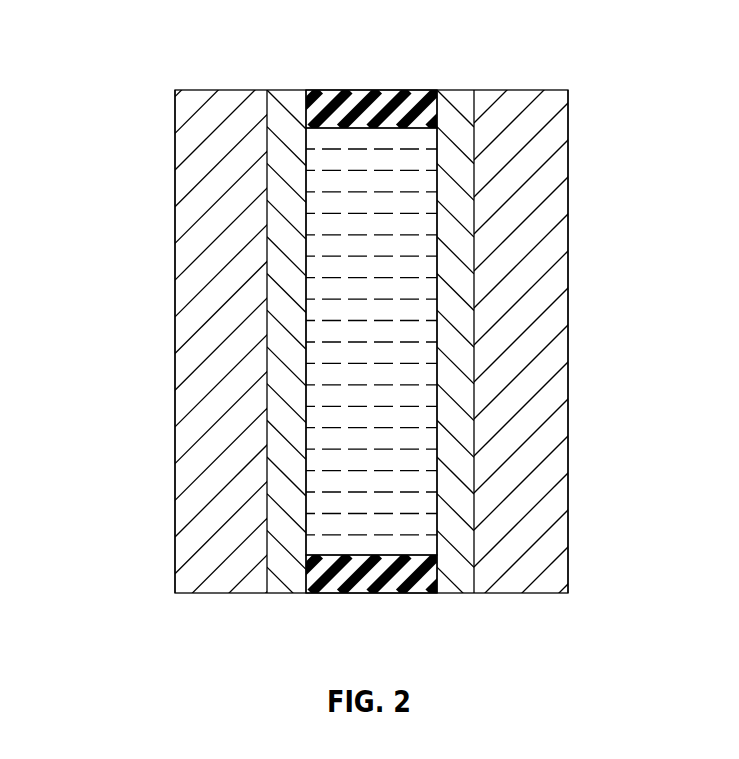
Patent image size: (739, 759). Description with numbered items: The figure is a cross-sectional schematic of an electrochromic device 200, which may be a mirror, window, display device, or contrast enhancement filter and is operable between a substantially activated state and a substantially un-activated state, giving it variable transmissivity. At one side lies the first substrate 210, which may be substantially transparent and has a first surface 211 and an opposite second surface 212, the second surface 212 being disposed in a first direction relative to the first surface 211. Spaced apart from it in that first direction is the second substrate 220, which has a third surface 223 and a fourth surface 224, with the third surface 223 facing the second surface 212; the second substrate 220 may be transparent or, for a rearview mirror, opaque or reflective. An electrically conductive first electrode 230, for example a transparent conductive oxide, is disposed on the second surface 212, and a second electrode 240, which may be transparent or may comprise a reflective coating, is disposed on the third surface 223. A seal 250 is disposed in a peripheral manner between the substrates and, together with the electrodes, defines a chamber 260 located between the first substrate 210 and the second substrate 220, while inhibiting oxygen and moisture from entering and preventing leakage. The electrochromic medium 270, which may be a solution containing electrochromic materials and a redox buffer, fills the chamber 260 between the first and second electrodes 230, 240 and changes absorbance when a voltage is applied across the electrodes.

The electrochromic device 200 is at (150, 74).
The first substrate 210 is at (517, 392).
The first surface 211 is at (568, 235).
The second surface 212 is at (474, 294).
The second substrate 220 is at (227, 392).
The third surface 223 is at (267, 293).
The fourth surface 224 is at (175, 233).
The first electrode 230 is at (462, 90).
The second electrode 240 is at (279, 90).
The seal 250 is at (366, 90).
The chamber 260 is at (392, 373).
The electrochromic medium 270 is at (390, 482).